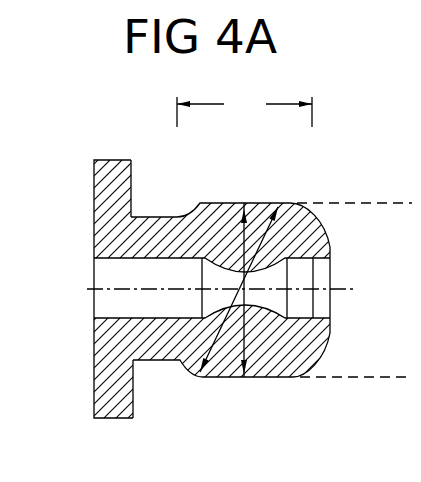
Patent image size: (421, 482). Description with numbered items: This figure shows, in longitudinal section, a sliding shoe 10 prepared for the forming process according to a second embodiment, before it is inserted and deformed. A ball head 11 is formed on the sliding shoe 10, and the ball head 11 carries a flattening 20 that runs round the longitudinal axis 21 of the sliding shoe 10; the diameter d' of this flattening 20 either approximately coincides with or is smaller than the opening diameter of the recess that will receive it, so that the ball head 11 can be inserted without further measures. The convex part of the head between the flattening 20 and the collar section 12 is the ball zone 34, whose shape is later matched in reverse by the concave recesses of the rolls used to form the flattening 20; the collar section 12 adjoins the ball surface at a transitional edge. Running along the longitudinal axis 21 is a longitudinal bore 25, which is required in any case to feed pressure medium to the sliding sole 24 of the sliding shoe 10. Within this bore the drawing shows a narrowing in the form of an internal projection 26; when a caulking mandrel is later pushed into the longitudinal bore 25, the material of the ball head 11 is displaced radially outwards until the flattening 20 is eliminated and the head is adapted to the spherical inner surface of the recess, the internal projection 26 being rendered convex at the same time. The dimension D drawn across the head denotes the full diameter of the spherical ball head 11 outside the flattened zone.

The sliding shoe 10 is at (118, 160).
The ball head 11 is at (192, 212).
The collar section 12 is at (155, 346).
The flattening 20 is at (263, 378).
The longitudinal axis 21 is at (146, 291).
The sliding sole 24 is at (94, 214).
The longitudinal bore 25 is at (113, 262).
The internal projection 26 is at (276, 312).
The ball zone 34 is at (244, 106).
The diameter of the flattening d' is at (230, 261).
The outer diameter D is at (276, 212).